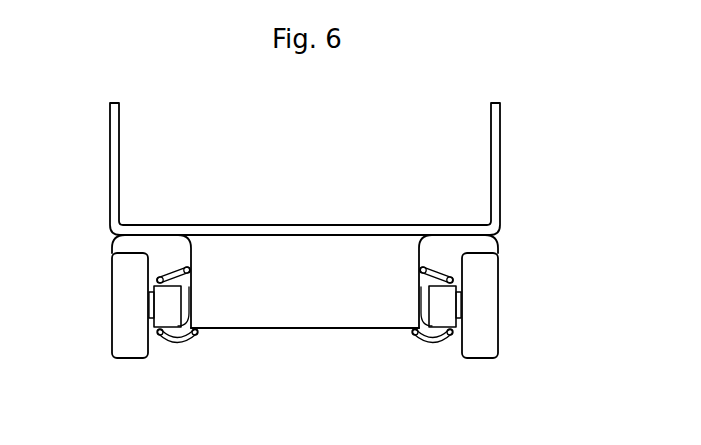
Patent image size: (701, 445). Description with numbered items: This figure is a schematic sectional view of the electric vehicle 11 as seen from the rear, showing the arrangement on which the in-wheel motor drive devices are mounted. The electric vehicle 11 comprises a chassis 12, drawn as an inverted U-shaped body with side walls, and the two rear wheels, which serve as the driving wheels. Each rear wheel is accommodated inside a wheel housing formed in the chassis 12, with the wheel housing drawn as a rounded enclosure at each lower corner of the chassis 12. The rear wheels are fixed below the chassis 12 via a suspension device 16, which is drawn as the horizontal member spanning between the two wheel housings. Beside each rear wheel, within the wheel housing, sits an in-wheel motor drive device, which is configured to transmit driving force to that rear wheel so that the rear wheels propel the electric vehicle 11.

The electric vehicle 11 is at (520, 155).
The chassis 12 is at (150, 162).
The suspension device 16 is at (307, 310).